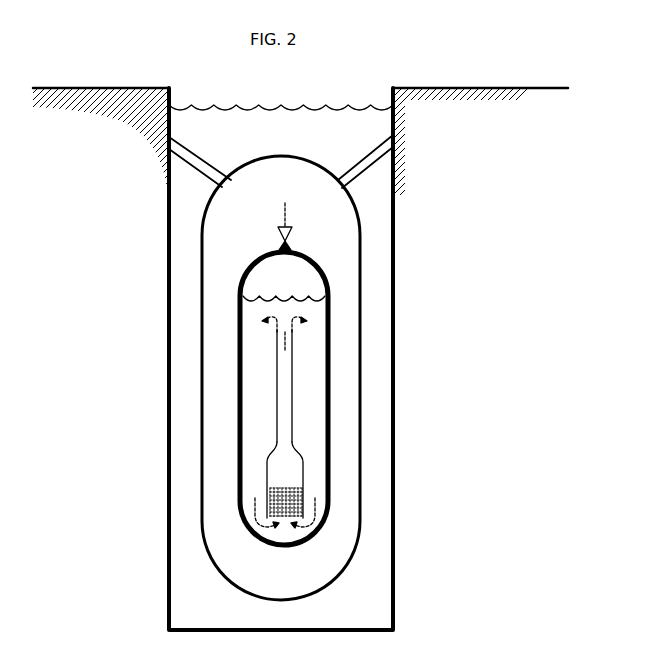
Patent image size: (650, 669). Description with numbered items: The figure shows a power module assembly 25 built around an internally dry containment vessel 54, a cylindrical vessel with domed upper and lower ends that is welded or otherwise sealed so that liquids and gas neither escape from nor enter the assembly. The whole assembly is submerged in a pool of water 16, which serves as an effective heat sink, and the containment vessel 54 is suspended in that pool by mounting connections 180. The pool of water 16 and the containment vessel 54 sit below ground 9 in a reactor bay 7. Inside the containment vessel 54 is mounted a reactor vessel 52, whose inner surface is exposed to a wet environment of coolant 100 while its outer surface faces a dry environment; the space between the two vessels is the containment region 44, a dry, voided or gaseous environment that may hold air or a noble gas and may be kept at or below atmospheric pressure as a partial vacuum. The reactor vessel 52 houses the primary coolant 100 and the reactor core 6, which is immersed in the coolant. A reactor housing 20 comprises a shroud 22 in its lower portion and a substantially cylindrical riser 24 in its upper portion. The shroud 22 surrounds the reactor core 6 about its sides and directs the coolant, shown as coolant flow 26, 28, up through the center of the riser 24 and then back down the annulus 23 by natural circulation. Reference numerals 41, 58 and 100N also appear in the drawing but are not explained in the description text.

The reactor core 6 is at (304, 497).
The reactor bay 7 is at (162, 547).
The ground 9 is at (543, 100).
The pool of water 16 is at (240, 141).
The reactor housing 20 is at (284, 353).
The shroud 22 is at (309, 473).
The annulus 23 is at (297, 445).
The riser 24 is at (303, 338).
The power module assembly 25 is at (190, 240).
The coolant flow 26 is at (257, 317).
The coolant flow 28 is at (316, 513).
The steam / cover gas region 41 is at (273, 275).
The containment region 44 is at (246, 209).
The reactor vessel 52 is at (335, 275).
The containment vessel 54 is at (368, 243).
The valve 58 is at (302, 230).
The primary coolant 100 is at (265, 419).
The coolant level 100N is at (325, 290).
The mounting connections 180 is at (362, 147).